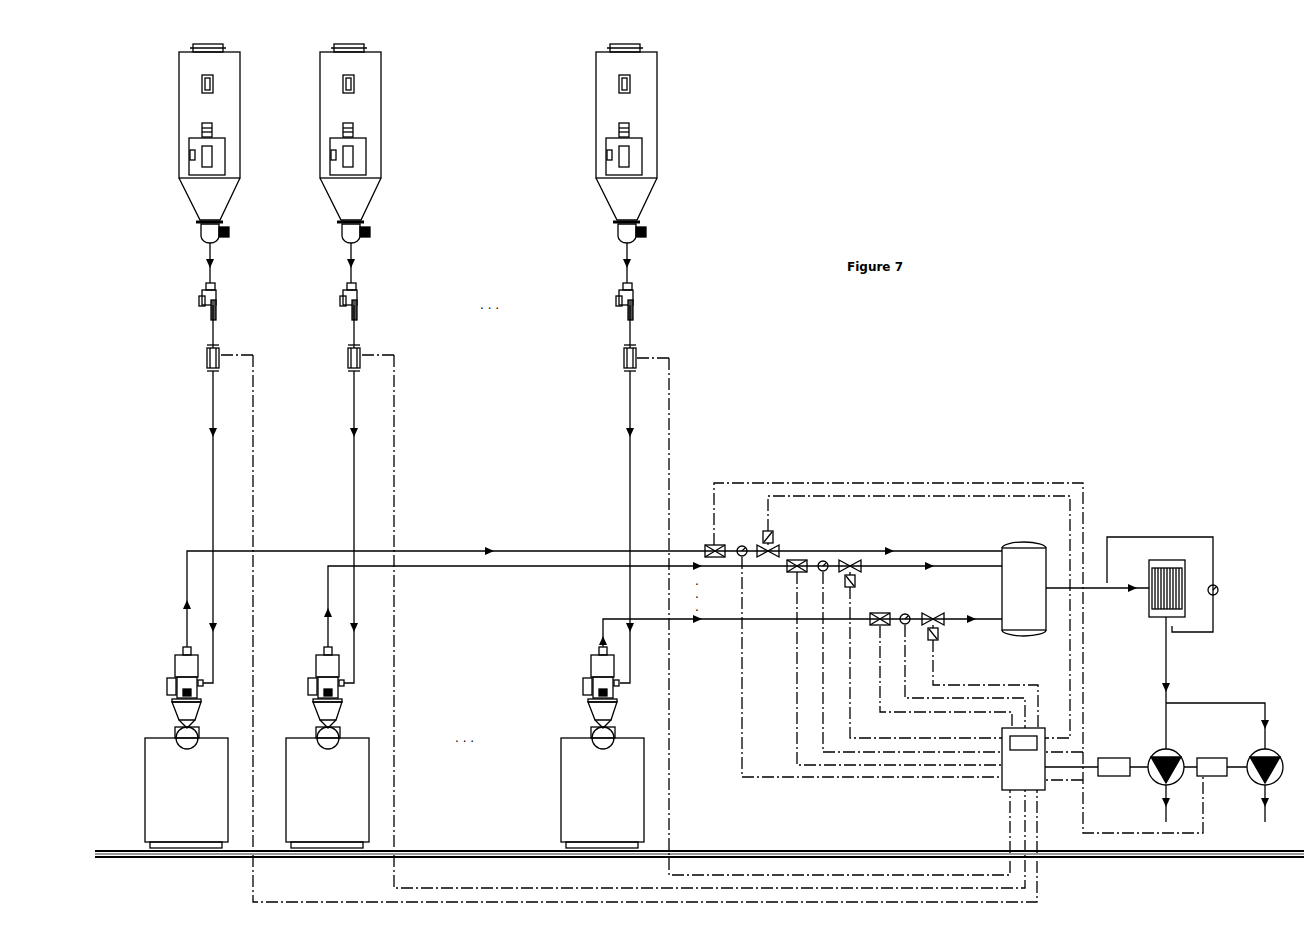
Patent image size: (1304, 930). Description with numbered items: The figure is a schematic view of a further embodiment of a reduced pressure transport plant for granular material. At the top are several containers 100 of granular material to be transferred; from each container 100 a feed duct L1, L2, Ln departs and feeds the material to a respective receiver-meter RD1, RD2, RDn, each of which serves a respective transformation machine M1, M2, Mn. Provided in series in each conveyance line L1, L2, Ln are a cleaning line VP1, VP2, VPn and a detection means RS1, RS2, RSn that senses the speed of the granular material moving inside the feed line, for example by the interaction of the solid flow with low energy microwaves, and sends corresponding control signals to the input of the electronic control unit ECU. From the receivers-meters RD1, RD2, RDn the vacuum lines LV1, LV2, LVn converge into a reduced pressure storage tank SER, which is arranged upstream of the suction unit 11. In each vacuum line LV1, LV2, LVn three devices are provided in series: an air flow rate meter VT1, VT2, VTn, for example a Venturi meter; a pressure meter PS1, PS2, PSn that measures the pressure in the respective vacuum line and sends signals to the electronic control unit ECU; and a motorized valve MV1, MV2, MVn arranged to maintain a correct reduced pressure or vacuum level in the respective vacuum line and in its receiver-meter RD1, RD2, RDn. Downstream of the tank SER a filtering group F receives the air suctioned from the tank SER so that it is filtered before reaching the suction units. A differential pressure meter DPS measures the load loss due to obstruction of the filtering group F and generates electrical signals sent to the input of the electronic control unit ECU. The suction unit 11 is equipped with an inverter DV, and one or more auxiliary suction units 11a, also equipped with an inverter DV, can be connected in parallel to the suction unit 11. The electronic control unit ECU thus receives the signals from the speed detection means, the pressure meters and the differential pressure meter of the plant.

The container 100 is at (179, 100).
The cleaning line VP1 is at (217, 300).
The cleaning line VP2 is at (358, 300).
The cleaning line VPn is at (634, 300).
The detection means RS1 is at (207, 358).
The detection means RS2 is at (348, 358).
The detection means RSn is at (624, 358).
The feed duct L1 is at (213, 478).
The feed duct L2 is at (354, 478).
The feed duct Ln is at (630, 478).
The vacuum line LV1 is at (270, 551).
The vacuum line LV2 is at (467, 566).
The vacuum line LVn is at (620, 617).
The receiver-meter RD1 is at (175, 666).
The receiver-meter RD2 is at (316, 666).
The receiver-meter RDn is at (591, 667).
The transformation machine M1 is at (186, 793).
The transformation machine M2 is at (327, 793).
The transformation machine Mn is at (602, 793).
The air flow rate meter VT1 is at (705, 548).
The air flow rate meter VT2 is at (792, 574).
The air flow rate meter VTn is at (883, 627).
The pressure meter PS1 is at (740, 546).
The pressure meter PS2 is at (825, 561).
The pressure meter PSn is at (908, 613).
The motorized valve MV1 is at (775, 540).
The motorized valve MV2 is at (856, 584).
The motorized valve MVn is at (940, 640).
The reduced pressure storage tank SER is at (1001, 548).
The filtering group F is at (1150, 572).
The differential pressure meter DPS is at (1220, 590).
The suction unit 11 is at (1153, 752).
The auxiliary suction unit 11a is at (1252, 782).
The inverter DV is at (1107, 777).
The electronic control unit ECU is at (1005, 794).